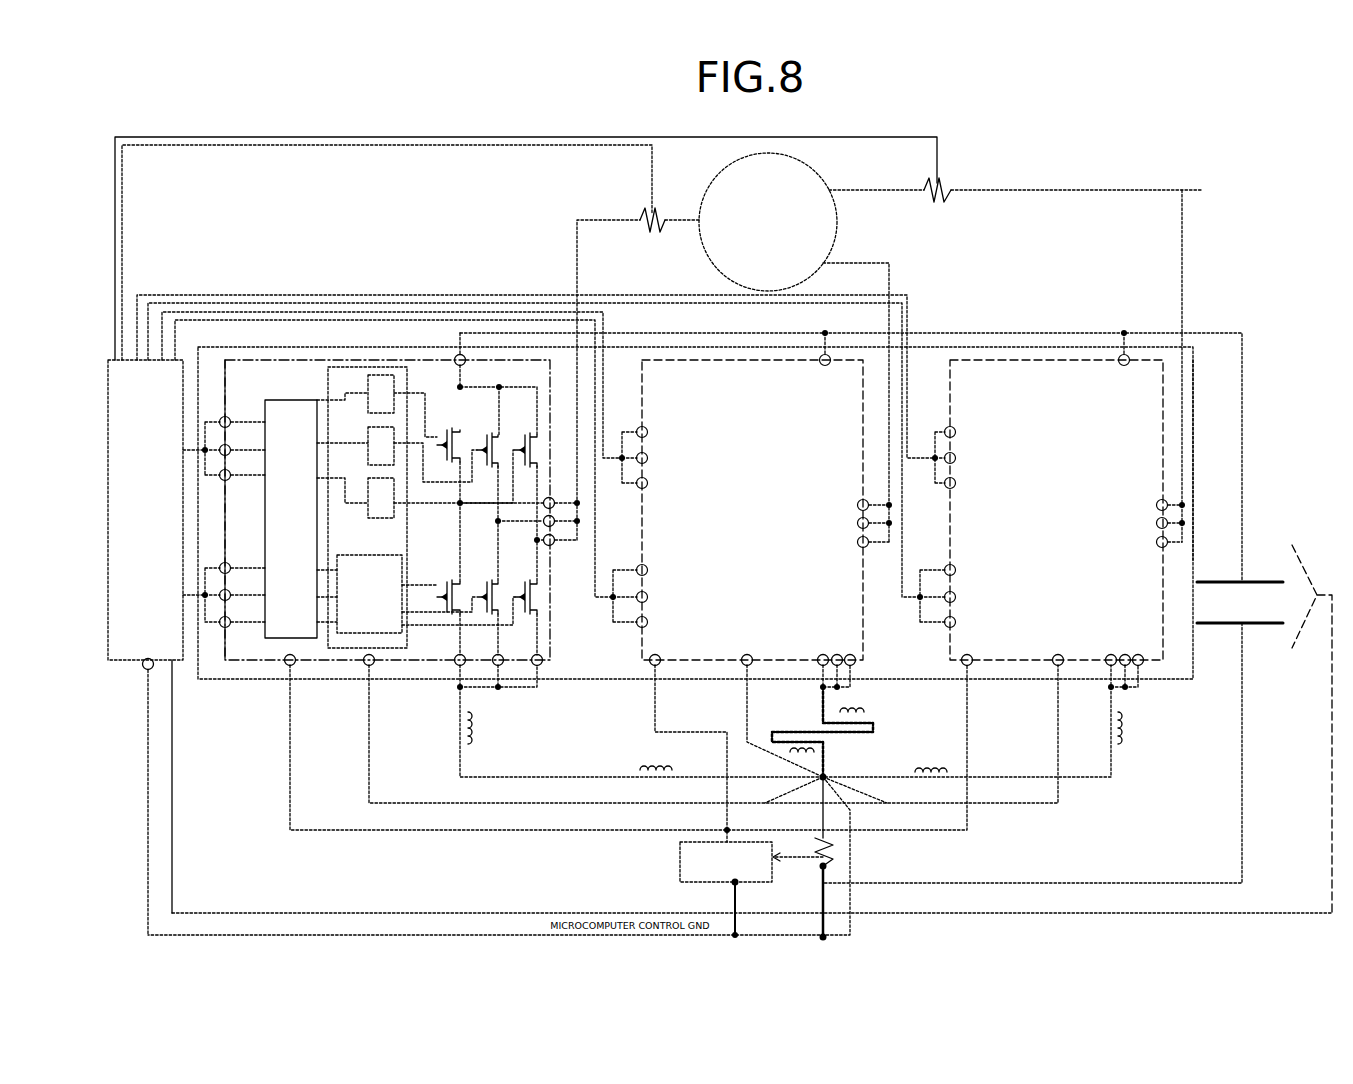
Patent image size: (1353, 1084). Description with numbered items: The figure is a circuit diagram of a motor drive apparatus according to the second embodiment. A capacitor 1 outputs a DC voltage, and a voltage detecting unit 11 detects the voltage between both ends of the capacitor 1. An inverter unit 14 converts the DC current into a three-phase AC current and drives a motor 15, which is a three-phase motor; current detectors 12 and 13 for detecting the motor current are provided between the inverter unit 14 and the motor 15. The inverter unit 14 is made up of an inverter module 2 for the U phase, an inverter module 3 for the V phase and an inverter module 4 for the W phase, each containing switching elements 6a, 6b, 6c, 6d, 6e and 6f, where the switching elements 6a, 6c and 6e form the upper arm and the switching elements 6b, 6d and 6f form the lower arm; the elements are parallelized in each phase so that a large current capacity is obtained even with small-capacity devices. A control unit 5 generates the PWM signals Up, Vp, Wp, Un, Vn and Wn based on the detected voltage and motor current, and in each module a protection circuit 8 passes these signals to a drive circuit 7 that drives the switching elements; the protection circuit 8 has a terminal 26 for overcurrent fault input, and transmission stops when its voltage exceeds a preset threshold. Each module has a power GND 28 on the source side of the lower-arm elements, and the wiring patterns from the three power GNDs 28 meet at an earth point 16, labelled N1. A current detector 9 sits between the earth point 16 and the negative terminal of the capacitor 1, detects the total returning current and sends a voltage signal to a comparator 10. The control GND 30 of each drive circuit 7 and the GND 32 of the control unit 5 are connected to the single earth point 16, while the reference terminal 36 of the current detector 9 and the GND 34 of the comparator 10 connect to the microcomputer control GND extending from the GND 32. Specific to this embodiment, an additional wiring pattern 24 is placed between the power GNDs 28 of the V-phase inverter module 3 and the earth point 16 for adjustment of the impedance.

The capacitor 1 is at (1268, 580).
The inverter module 2 is at (290, 358).
The inverter module 3 is at (655, 360).
The inverter module 4 is at (990, 360).
The control unit 5 is at (108, 443).
The switching element 6a is at (446, 430).
The switching element 6b is at (446, 580).
The switching element 6c is at (486, 437).
The switching element 6d is at (486, 580).
The switching element 6e is at (526, 437).
The switching element 6f is at (526, 580).
The drive circuit 7 is at (369, 367).
The protection circuit 8 is at (263, 400).
The current detector 9 is at (836, 860).
The comparator 10 is at (680, 860).
The voltage detecting unit 11 is at (1300, 576).
The current detector 12 is at (642, 216).
The current detector 13 is at (925, 188).
The inverter unit 14 is at (1196, 423).
The motor 15 is at (838, 222).
The earth point 16 is at (830, 776).
The wiring pattern 24 is at (873, 727).
The terminal 26 is at (288, 666).
The power GND 28 is at (459, 666).
The control GND 30 is at (369, 666).
The GND 32 is at (144, 670).
The GND 34 is at (733, 885).
The reference terminal 36 is at (822, 869).